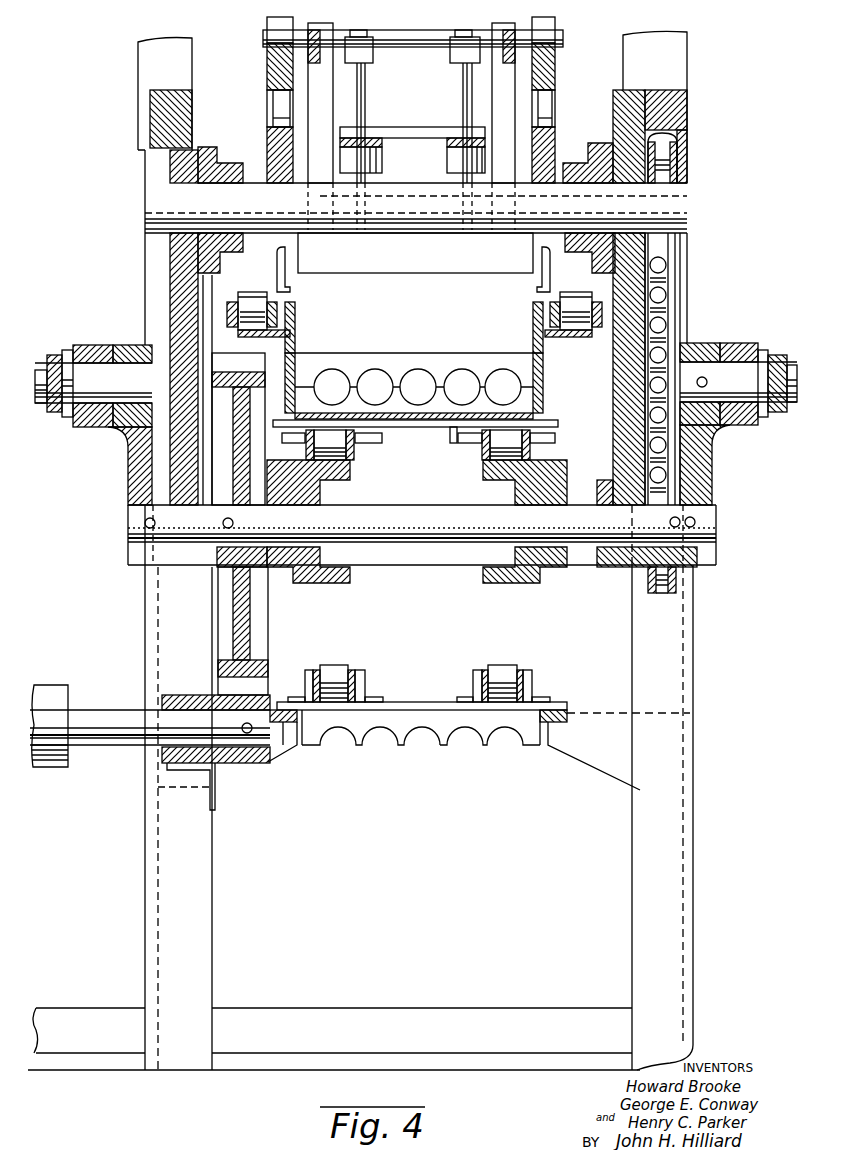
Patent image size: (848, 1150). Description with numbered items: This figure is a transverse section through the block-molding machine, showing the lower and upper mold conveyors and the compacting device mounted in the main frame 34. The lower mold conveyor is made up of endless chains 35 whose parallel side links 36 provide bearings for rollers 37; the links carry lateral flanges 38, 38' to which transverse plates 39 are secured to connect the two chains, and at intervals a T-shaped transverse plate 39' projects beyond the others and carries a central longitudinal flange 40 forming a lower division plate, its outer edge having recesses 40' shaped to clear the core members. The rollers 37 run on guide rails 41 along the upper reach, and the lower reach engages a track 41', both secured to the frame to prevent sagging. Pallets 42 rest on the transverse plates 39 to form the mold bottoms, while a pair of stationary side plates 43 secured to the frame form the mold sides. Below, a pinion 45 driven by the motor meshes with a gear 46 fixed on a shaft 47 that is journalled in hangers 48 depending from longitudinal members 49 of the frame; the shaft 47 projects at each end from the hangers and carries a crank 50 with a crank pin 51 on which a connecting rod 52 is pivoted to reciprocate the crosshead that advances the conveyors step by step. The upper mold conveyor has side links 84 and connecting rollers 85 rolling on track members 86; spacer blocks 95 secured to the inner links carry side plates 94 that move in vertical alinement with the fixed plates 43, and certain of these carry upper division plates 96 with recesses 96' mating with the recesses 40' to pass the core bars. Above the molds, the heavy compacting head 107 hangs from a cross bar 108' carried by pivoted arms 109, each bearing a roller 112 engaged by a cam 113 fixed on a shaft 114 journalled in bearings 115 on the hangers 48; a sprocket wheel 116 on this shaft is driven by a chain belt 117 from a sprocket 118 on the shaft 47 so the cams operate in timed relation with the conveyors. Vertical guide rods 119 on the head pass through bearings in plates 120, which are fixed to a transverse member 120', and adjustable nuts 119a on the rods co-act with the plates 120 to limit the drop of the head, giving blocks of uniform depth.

The main frame 34 is at (148, 880).
The endless chains 35 is at (320, 671).
The side links 36 is at (348, 448).
The rollers 37 is at (473, 457).
The lateral flanges 38 is at (420, 567).
The flange 38' is at (443, 442).
The transverse plates 39 is at (415, 443).
The transverse plate 39' is at (483, 712).
The longitudinal flange 40 is at (466, 570).
The recesses 40' is at (371, 554).
The guide rails 41 is at (309, 521).
The track 41' is at (454, 625).
The pallets 42 is at (540, 410).
The stationary plates 43 is at (568, 377).
The pinion 45 is at (250, 772).
The gear 46 is at (253, 642).
The shaft 47 is at (450, 537).
The hangers 48 is at (170, 309).
The longitudinal members 49 is at (160, 88).
The bearing hub 50 is at (130, 460).
The crank pin 51 is at (88, 367).
The connecting rod 52 is at (103, 427).
The side links 84 is at (240, 312).
The connecting rollers 85 is at (252, 302).
The members 86 is at (250, 341).
The side plates 94 is at (297, 330).
The spacer blocks 95 is at (275, 302).
The transverse plates 96 is at (356, 362).
The recesses 96' is at (475, 362).
The block of metal 107 is at (507, 262).
The cross bar 108' is at (413, 96).
The arms 109 is at (275, 66).
The roller 112 is at (280, 113).
The cam 113 is at (273, 138).
The shaft 114 is at (413, 181).
The bearings 115 is at (575, 143).
The sprocket wheel 116 is at (682, 172).
The chain belt 117 is at (653, 288).
The sprocket 118 is at (665, 597).
The guide rods 119 is at (463, 80).
The nuts 119a is at (372, 62).
The plates 120 is at (412, 155).
The transverse member 120' is at (412, 124).